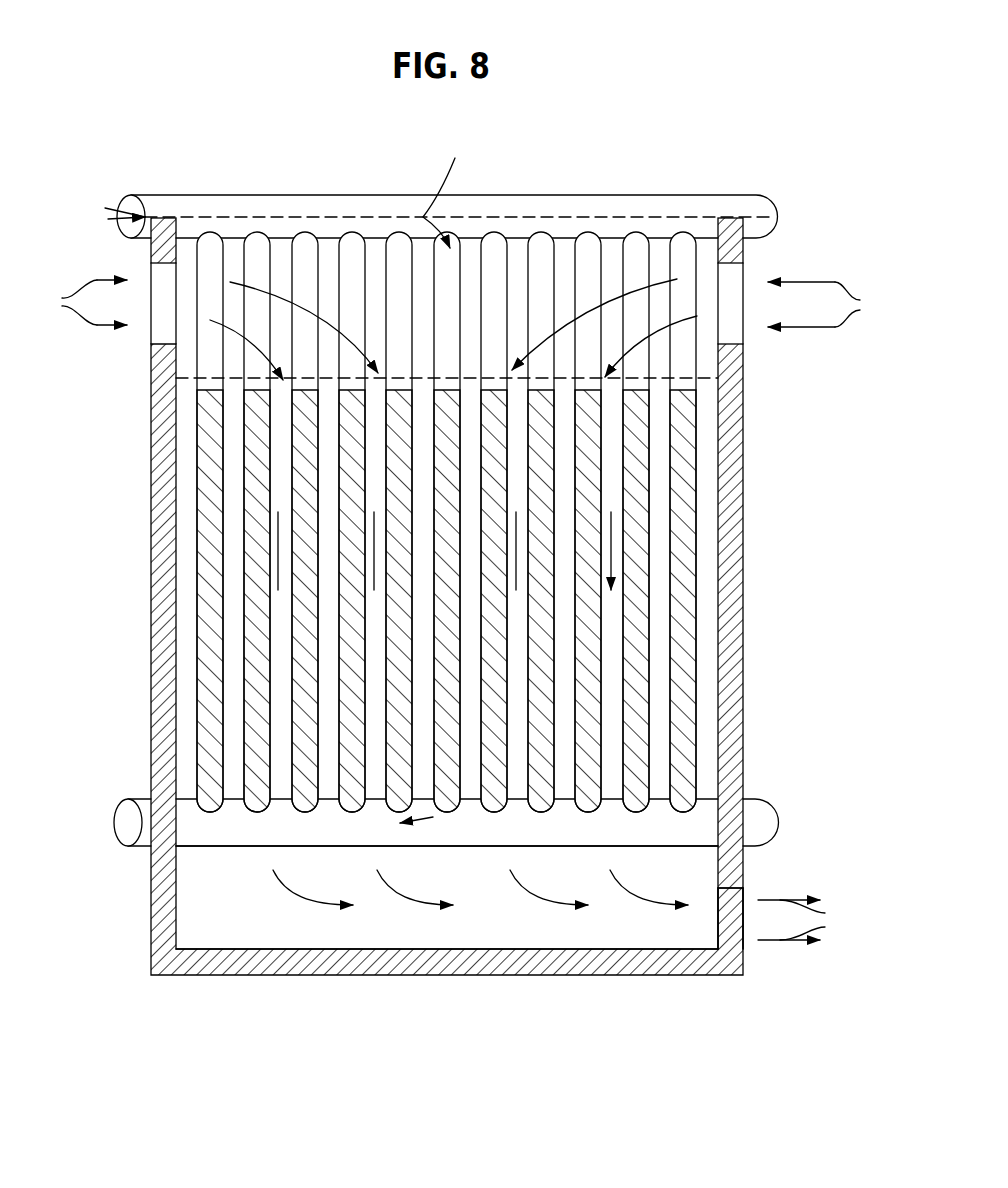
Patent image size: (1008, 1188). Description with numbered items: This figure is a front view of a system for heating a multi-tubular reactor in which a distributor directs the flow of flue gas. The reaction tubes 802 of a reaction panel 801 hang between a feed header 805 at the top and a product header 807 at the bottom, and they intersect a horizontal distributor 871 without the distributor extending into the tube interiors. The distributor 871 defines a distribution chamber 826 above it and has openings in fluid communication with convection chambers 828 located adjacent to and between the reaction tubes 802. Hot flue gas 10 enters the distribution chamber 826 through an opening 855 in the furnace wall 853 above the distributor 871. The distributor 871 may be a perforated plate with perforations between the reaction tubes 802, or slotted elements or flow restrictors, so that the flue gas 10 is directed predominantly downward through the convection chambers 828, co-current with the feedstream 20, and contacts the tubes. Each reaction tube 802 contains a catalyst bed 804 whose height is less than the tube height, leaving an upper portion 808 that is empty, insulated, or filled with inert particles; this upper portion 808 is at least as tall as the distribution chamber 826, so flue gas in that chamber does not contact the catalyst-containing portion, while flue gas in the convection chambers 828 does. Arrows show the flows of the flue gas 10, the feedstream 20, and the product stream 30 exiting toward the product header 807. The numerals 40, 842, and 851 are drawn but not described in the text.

The flue gas 10 is at (460, 303).
The feedstream 20 is at (70, 247).
The product stream 30 is at (433, 817).
The air flow outlet 40 is at (807, 920).
The reaction panel 801 is at (508, 287).
The reaction tubes 802 is at (543, 275).
The catalyst bed 804 is at (690, 470).
The feed header 805 is at (375, 208).
The product header 807 is at (263, 832).
The upper portion 808 is at (112, 820).
The distribution chamber 826 is at (373, 302).
The convection chambers 828 is at (302, 655).
The air outlet opening 842 is at (745, 940).
The header center line 851 is at (226, 217).
The furnace wall 853 is at (730, 407).
The opening 855 is at (732, 277).
The distributor 871 is at (658, 348).